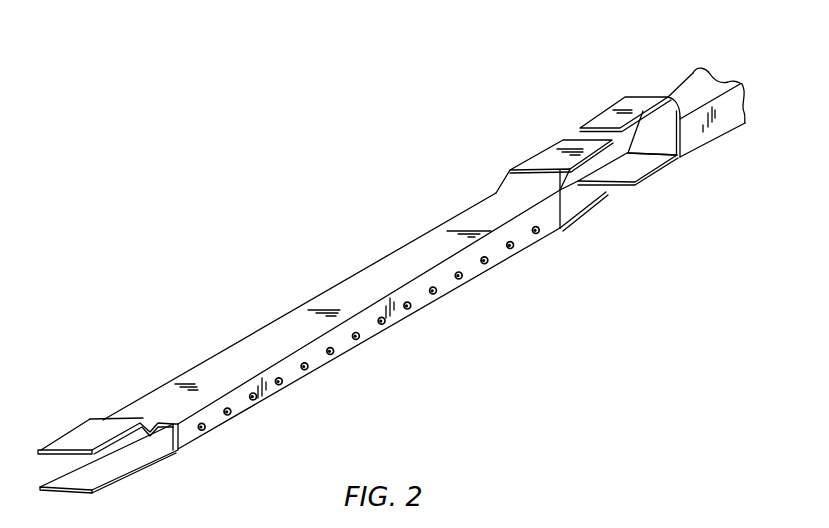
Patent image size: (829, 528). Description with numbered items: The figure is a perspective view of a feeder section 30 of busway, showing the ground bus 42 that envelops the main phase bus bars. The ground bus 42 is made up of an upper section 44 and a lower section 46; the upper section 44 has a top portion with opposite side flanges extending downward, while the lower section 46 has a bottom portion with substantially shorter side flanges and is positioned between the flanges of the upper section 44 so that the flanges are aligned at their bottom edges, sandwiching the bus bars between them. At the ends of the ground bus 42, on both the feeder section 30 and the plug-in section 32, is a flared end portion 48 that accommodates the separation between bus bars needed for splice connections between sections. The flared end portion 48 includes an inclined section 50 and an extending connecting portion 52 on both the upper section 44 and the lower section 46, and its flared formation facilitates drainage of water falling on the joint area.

The feeder section 30 is at (407, 260).
The plug-in section 32 is at (697, 66).
The ground bus 42 is at (245, 431).
The upper section 44 is at (222, 372).
The lower section 46 is at (173, 454).
The flared end portion 48 is at (43, 449).
The inclined section 50 is at (140, 422).
The connecting portion 52 is at (78, 438).